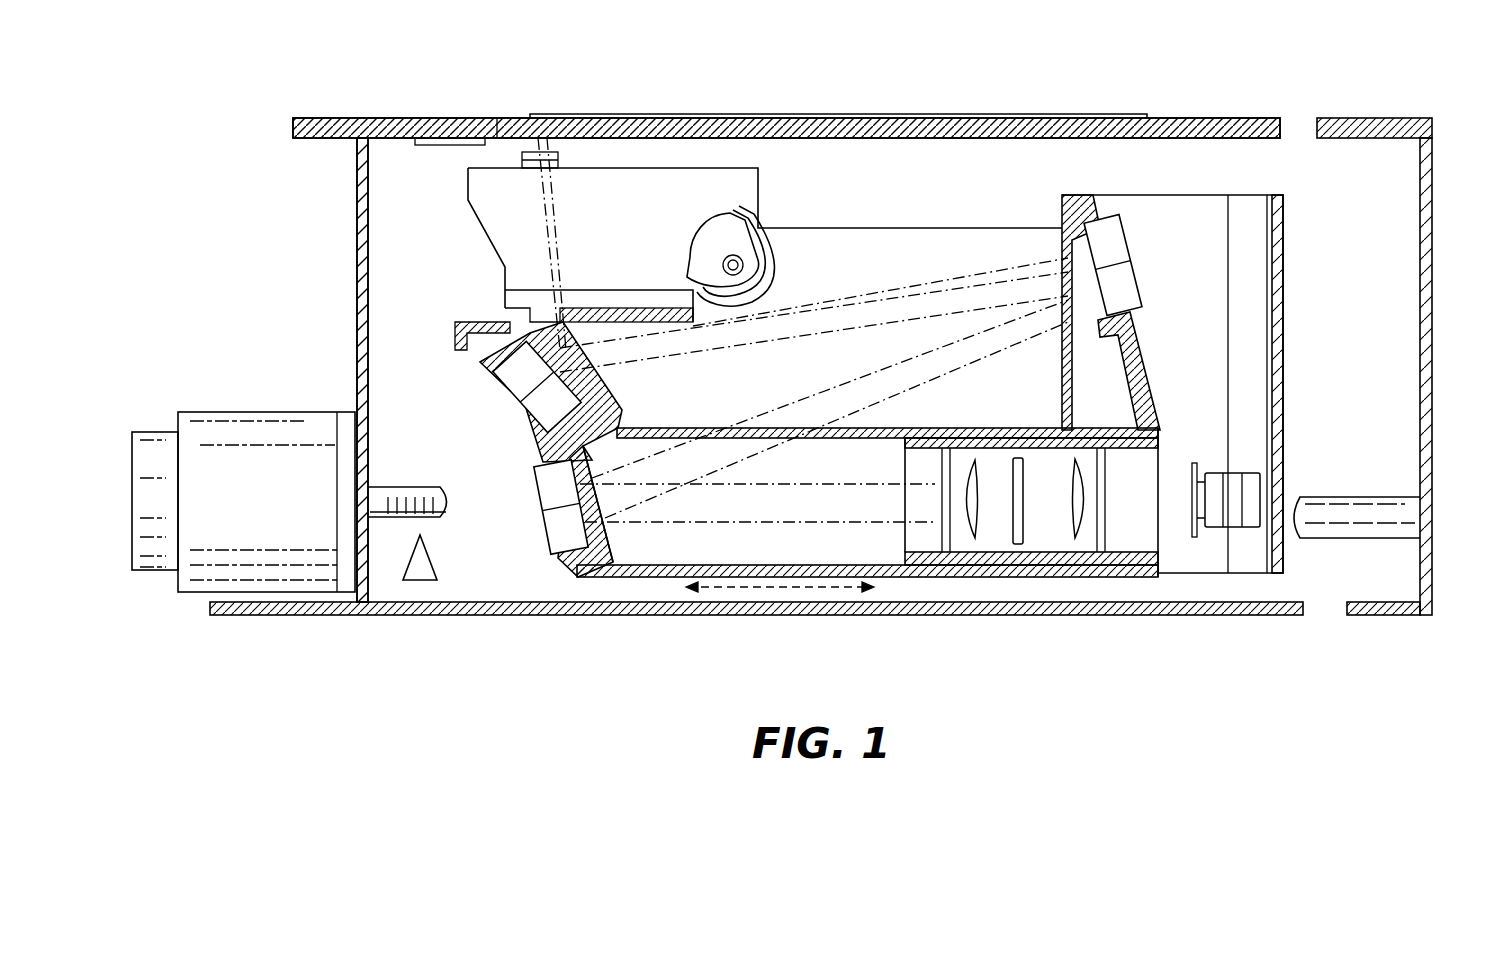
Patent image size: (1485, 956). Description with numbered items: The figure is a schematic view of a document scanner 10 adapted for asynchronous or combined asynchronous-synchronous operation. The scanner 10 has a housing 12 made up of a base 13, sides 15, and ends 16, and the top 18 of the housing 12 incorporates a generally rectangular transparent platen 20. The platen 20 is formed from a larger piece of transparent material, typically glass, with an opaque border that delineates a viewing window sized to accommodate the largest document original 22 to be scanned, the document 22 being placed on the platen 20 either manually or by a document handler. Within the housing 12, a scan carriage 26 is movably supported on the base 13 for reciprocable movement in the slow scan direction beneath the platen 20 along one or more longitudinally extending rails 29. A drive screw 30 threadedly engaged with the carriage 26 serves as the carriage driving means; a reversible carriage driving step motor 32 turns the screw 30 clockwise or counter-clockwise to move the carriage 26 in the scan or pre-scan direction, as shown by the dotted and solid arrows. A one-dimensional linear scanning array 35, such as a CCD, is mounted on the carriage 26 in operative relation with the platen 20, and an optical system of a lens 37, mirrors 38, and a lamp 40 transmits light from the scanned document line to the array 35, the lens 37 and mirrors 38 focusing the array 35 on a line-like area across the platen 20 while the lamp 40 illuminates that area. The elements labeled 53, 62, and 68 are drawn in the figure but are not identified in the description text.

The document scanner 10 is at (576, 66).
The housing 12 is at (302, 161).
The base 13 is at (535, 616).
The sides 15 is at (1378, 180).
The ends 16 is at (357, 280).
The top 18 is at (445, 118).
The transparent platen 20 is at (892, 140).
The document original 22 is at (1055, 117).
The scan carriage 26 is at (974, 182).
The rails 29 is at (1367, 505).
The drive screw 30 is at (437, 487).
The carriage driving step motor 32 is at (283, 412).
The linear scanning array 35 is at (1202, 562).
The lens 37 is at (1055, 513).
The mirrors 38 is at (1110, 252).
The lamp 40 is at (790, 232).
The mounting plate 53 is at (442, 146).
The index mark 62 is at (418, 598).
The light source 68 is at (560, 148).